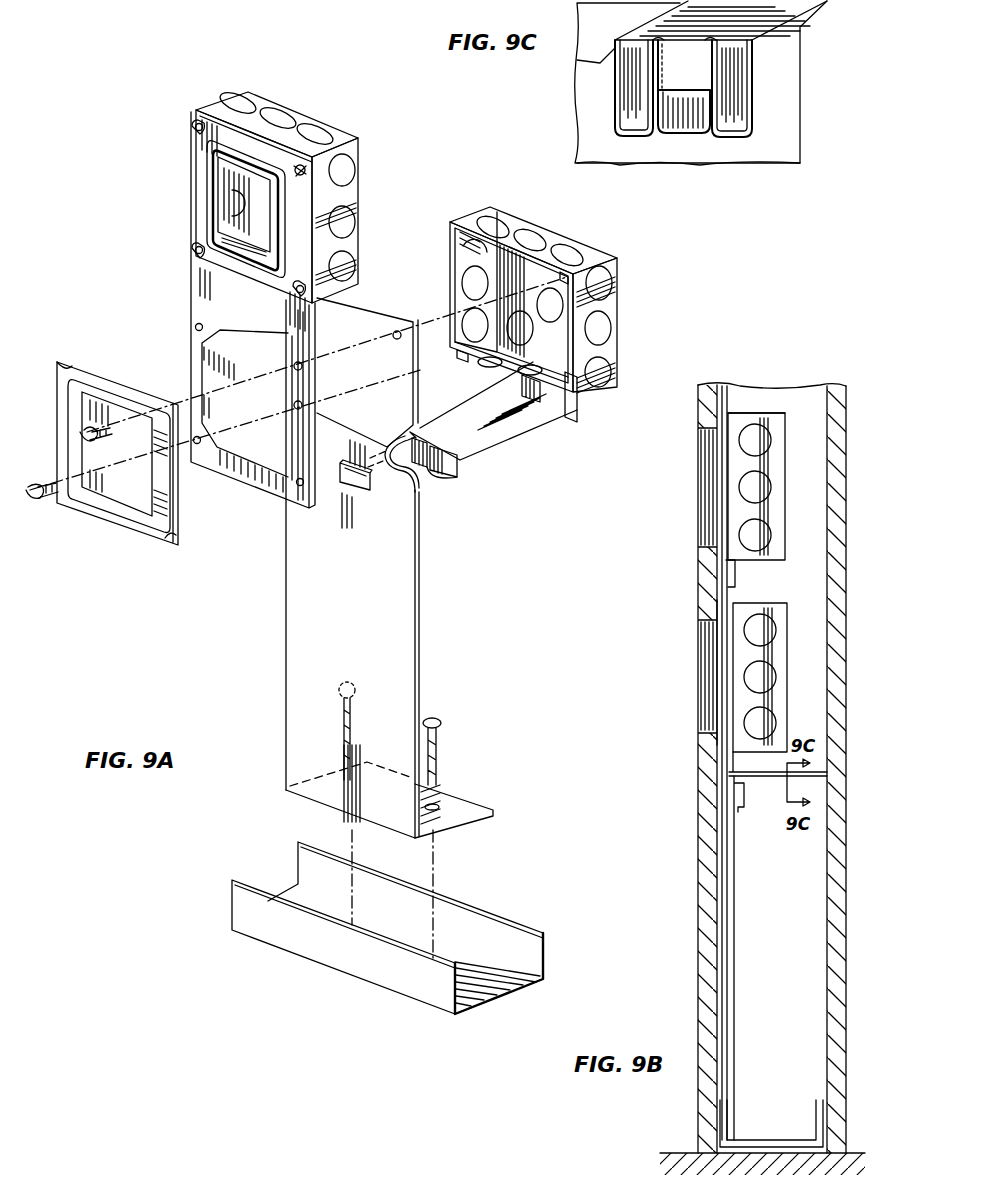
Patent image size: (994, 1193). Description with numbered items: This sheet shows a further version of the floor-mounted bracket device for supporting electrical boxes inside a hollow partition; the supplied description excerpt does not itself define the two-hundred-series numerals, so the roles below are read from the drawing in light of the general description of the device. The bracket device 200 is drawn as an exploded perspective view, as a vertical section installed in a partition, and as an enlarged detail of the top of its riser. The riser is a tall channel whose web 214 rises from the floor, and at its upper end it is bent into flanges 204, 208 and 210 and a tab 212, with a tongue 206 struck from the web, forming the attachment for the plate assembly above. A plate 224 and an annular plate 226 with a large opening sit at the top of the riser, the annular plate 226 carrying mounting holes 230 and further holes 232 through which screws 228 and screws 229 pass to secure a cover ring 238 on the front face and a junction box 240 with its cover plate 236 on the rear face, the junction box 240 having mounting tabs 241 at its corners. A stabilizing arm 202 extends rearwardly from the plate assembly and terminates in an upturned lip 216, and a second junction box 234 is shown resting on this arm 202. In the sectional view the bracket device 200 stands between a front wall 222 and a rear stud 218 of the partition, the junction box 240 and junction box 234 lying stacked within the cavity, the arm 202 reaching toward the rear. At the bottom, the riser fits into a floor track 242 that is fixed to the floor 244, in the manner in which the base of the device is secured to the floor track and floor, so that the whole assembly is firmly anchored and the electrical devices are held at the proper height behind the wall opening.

In FIG. 9A, the post assembly 200 is at (272, 600).
In FIG. 9C, the post assembly 200 is at (785, 172).
In FIG. 9B, the post assembly 200 is at (748, 912).
In FIG. 9A, the support shelf 202 is at (484, 434).
In FIG. 9A, the side flange 204 is at (440, 470).
In FIG. 9C, the side flange 204 is at (618, 62).
In FIG. 9A, the tongue 206 is at (355, 492).
In FIG. 9C, the tongue 206 is at (665, 134).
In FIG. 9A, the flange 208 is at (458, 465).
In FIG. 9C, the flange 208 is at (620, 95).
In FIG. 9A, the bracket clip 210 is at (406, 440).
In FIG. 9C, the bracket clip 210 is at (746, 95).
In FIG. 9A, the tab 212 is at (432, 472).
In FIG. 9C, the tab 212 is at (697, 128).
In FIG. 9C, the web 214 is at (592, 120).
In FIG. 9B, the web 214 is at (735, 992).
In FIG. 9A, the end lip 216 is at (572, 408).
In FIG. 9B, the end lip 216 is at (827, 760).
In FIG. 9B, the stud 218 is at (827, 1040).
In FIG. 9B, the wall 222 is at (698, 915).
In FIG. 9A, the mounting plate 224 is at (270, 328).
In FIG. 9A, the adapter plate 226 is at (194, 107).
In FIG. 9A, the screws 228 is at (70, 478).
In FIG. 9A, the screws 229 is at (195, 252).
In FIG. 9A, the mounting holes 230 is at (200, 326).
In FIG. 9A, the back plate holes 232 is at (397, 331).
In FIG. 9A, the electrical box 234 is at (577, 247).
In FIG. 9B, the electrical box 234 is at (778, 603).
In FIG. 9A, the cover plate 236 is at (282, 104).
In FIG. 9B, the cover plate 236 is at (760, 413).
In FIG. 9A, the cover ring 238 is at (80, 365).
In FIG. 9B, the cover ring 238 is at (700, 697).
In FIG. 9A, the electrical box 240 is at (248, 98).
In FIG. 9B, the electrical box 240 is at (698, 494).
In FIG. 9A, the mounting tabs 241 is at (195, 132).
In FIG. 9A, the floor channel 242 is at (300, 948).
In FIG. 9B, the floor channel 242 is at (762, 1145).
In FIG. 9B, the floor 244 is at (680, 1153).